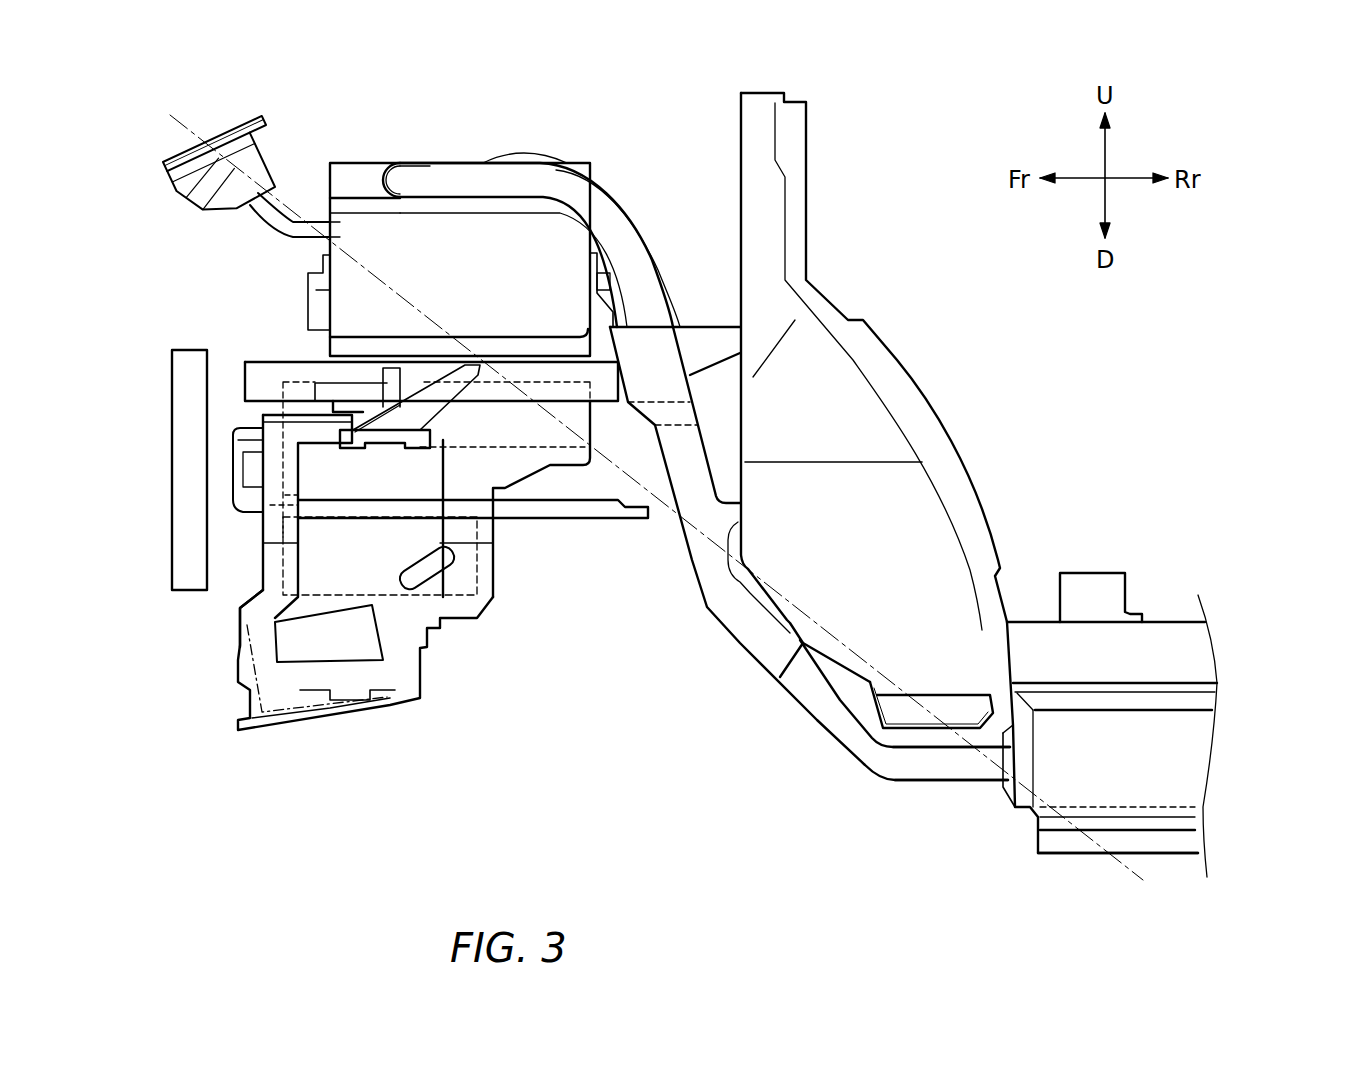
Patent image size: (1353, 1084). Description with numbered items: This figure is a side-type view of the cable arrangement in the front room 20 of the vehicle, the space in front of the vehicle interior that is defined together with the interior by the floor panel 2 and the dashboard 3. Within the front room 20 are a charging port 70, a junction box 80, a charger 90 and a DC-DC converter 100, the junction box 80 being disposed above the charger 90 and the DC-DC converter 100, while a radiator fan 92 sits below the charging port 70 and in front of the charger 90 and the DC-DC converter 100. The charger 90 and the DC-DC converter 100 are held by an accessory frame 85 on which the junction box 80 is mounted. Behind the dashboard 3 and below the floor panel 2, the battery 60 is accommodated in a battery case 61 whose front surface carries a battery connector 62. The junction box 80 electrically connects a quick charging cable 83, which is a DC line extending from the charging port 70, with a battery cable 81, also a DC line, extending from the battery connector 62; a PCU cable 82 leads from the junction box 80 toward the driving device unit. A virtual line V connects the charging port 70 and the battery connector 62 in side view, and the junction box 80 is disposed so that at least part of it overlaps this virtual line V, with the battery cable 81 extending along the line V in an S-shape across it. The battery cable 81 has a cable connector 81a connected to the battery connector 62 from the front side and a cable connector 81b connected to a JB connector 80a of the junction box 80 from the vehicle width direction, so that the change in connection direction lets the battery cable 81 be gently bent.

The floor panel 2 is at (1167, 618).
The dashboard 3 is at (741, 130).
The front room 20 is at (624, 113).
The battery 60 is at (1212, 743).
The battery case 61 is at (1163, 857).
The battery connector 62 is at (1008, 792).
The charging port 70 is at (225, 130).
The junction box 80 is at (553, 248).
The JB connector 80a is at (378, 178).
The battery cable 81 is at (555, 190).
The cable connector 81a is at (978, 765).
The cable connector 81b is at (405, 182).
The PCU cable 82 is at (527, 160).
The quick charging cable 83 is at (280, 236).
The accessory frame 85 is at (265, 362).
The charger 90 is at (565, 455).
The radiator fan 92 is at (172, 385).
The DC-DC converter 100 is at (417, 543).
The virtual line V is at (292, 213).